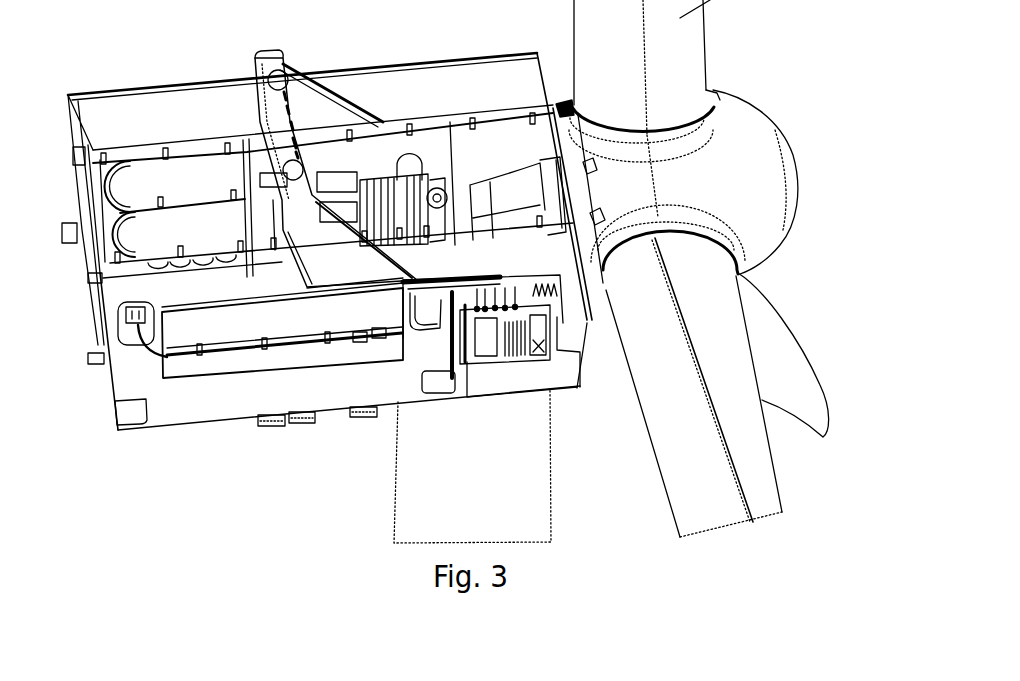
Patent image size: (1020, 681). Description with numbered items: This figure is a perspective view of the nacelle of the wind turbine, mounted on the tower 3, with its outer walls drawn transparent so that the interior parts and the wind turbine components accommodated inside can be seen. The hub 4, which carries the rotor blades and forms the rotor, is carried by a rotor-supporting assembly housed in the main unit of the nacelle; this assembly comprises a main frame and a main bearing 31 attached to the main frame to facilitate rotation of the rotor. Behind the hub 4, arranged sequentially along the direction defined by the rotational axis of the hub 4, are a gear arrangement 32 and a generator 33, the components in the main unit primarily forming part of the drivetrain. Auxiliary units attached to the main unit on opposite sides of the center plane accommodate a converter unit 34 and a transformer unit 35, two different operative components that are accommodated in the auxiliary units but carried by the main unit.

The tower 3 is at (397, 442).
The hub 4 is at (770, 212).
The main bearing 31 is at (517, 172).
The gear arrangement 32 is at (390, 178).
The generator 33 is at (343, 177).
The converter unit 34 is at (240, 342).
The transformer unit 35 is at (545, 352).